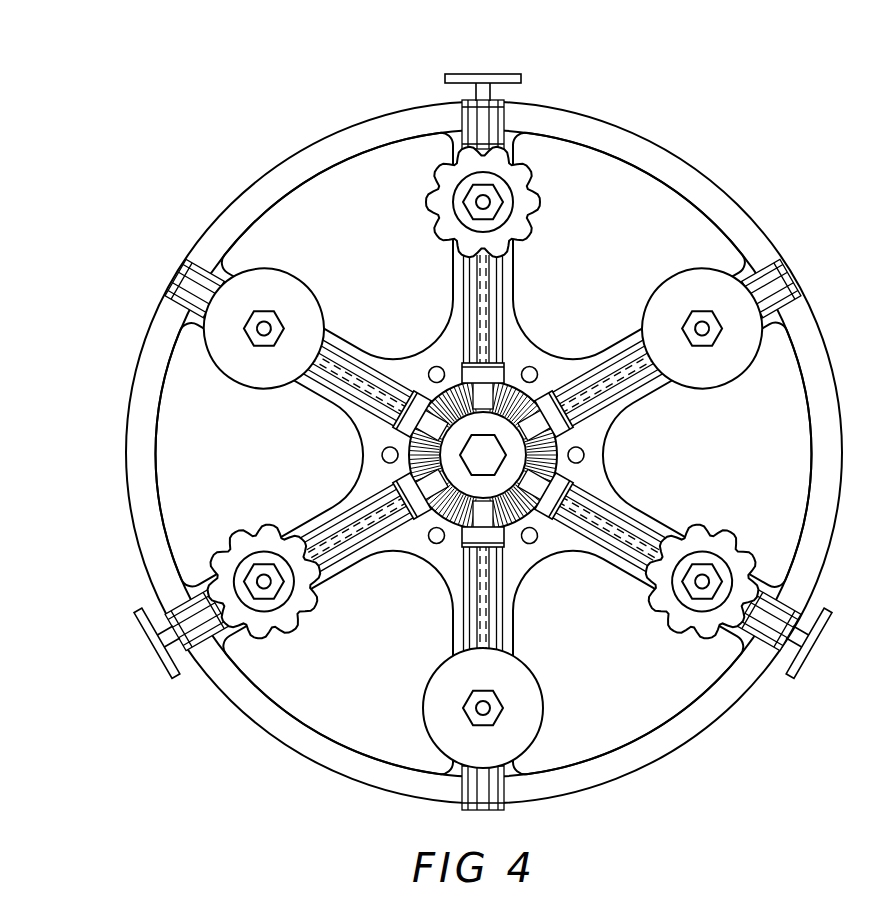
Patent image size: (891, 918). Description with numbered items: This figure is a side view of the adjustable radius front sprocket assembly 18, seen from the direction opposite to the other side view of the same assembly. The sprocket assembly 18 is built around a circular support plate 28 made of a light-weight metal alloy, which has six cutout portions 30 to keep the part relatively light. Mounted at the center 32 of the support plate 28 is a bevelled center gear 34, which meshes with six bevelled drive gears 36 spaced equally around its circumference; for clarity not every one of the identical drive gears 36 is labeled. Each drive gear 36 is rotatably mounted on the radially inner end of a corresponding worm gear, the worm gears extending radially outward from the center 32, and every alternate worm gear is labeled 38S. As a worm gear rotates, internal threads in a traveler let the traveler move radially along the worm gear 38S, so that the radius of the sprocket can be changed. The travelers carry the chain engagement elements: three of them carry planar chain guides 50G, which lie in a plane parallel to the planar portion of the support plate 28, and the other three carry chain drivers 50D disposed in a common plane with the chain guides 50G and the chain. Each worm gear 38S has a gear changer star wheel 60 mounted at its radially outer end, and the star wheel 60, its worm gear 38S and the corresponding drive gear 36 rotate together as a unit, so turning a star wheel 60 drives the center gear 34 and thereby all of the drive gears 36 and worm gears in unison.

The front sprocket assembly 18 is at (735, 774).
The support plate 28 is at (822, 538).
The cutout portions 30 is at (812, 444).
The center 32 is at (488, 447).
The bevelled center gear 34 is at (441, 521).
The bevelled drive gears 36 is at (404, 437).
The worm gear 38S is at (640, 528).
The planar chain guide 50G is at (690, 270).
The chain driver 50D is at (735, 545).
The gear changer star wheel 60 is at (518, 76).